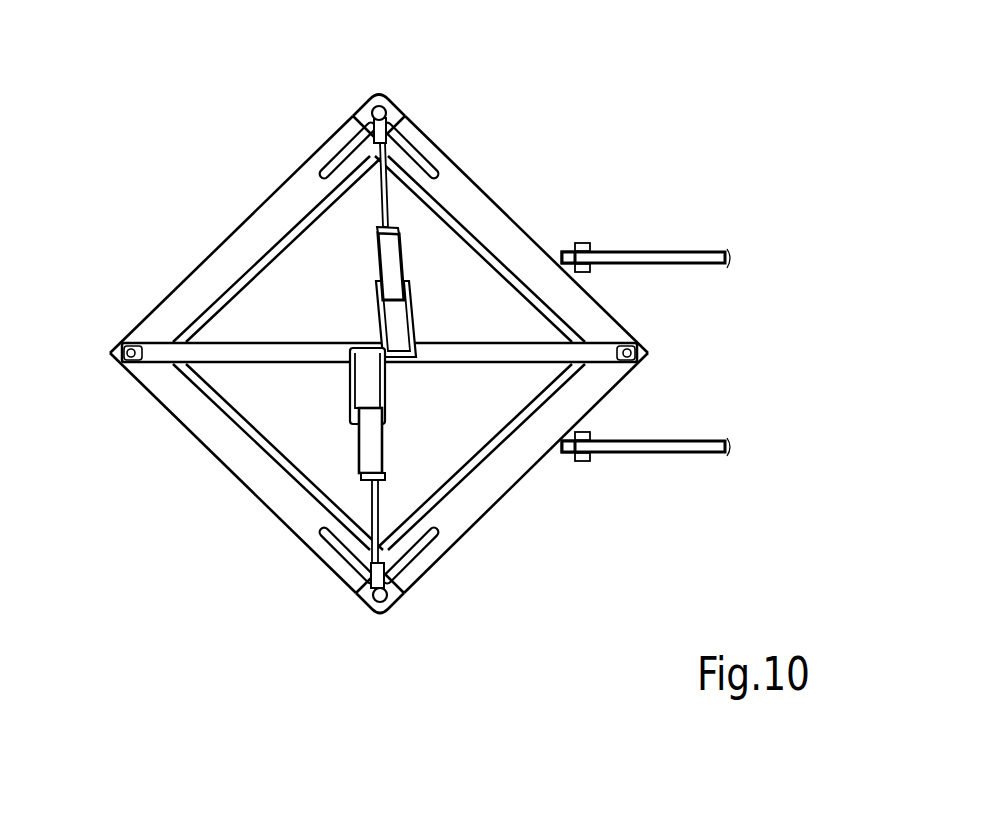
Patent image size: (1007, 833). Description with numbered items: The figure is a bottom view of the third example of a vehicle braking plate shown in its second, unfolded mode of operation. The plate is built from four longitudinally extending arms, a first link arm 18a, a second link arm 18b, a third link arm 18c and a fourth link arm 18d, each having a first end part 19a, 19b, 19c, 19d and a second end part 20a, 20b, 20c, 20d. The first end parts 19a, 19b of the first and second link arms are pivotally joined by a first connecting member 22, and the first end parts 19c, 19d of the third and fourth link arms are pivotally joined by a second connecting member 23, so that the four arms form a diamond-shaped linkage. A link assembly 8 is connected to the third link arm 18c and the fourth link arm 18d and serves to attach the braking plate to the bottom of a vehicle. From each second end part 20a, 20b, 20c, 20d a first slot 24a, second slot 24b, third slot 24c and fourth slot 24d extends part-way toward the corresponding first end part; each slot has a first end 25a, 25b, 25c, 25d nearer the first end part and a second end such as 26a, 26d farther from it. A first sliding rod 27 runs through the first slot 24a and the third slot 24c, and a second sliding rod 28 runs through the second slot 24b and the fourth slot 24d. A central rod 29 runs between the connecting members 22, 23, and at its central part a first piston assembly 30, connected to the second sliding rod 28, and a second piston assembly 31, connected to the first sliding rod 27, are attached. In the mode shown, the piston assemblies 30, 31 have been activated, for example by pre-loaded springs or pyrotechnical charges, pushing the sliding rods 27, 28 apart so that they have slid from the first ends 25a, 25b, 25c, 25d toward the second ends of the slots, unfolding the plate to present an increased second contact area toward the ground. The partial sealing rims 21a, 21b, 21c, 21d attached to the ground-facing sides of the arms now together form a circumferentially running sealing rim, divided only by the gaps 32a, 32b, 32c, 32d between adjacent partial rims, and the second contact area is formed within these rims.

The link assembly 8 is at (726, 272).
The first link arm 18a is at (183, 428).
The second link arm 18b is at (228, 238).
The third link arm 18c is at (536, 466).
The fourth link arm 18d is at (481, 190).
The first end part 19a is at (108, 335).
The first end part 19b is at (114, 372).
The first end part 19c is at (650, 340).
The first end part 19d is at (645, 372).
The second end part 20a is at (400, 612).
The second end part 20b is at (392, 97).
The second end part 20c is at (365, 612).
The second end part 20d is at (371, 95).
The partial sealing rim 21a is at (235, 425).
The partial sealing rim 21b is at (228, 290).
The partial sealing rim 21c is at (528, 438).
The partial sealing rim 21d is at (470, 214).
The first connecting member 22 is at (120, 352).
The second connecting member 23 is at (650, 357).
The first slot 24a is at (340, 575).
The second slot 24b is at (338, 152).
The third slot 24c is at (425, 570).
The fourth slot 24d is at (434, 141).
The first end 25a is at (316, 536).
The first end 25b is at (312, 170).
The first end 25c is at (447, 534).
The first end 25d is at (451, 171).
The second end 26a is at (398, 605).
The second end 26d is at (366, 106).
The first sliding rod 27 is at (383, 621).
The second sliding rod 28 is at (399, 108).
The central rod 29 is at (323, 372).
The first piston assembly 30 is at (413, 270).
The second piston assembly 31 is at (390, 447).
The gap 32a is at (158, 334).
The gap 32b is at (408, 592).
The gap 32c is at (596, 338).
The gap 32d is at (410, 118).